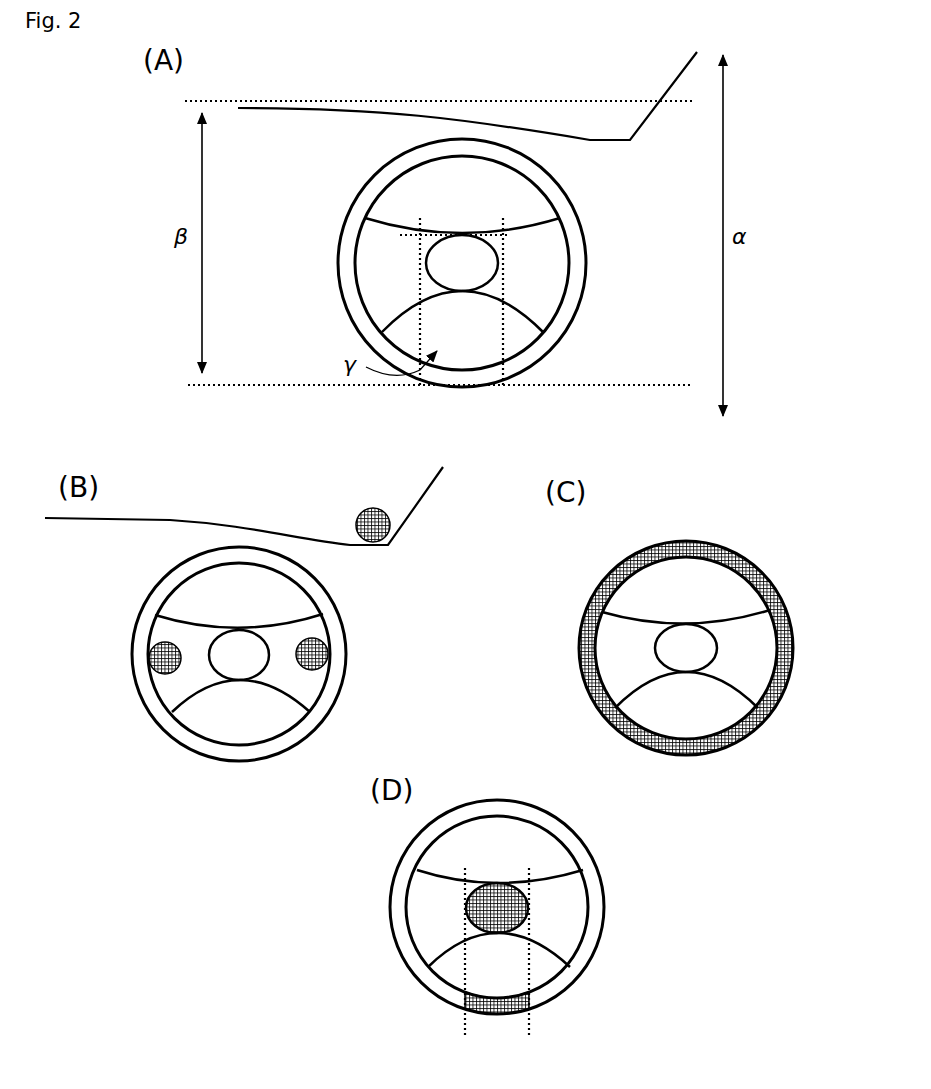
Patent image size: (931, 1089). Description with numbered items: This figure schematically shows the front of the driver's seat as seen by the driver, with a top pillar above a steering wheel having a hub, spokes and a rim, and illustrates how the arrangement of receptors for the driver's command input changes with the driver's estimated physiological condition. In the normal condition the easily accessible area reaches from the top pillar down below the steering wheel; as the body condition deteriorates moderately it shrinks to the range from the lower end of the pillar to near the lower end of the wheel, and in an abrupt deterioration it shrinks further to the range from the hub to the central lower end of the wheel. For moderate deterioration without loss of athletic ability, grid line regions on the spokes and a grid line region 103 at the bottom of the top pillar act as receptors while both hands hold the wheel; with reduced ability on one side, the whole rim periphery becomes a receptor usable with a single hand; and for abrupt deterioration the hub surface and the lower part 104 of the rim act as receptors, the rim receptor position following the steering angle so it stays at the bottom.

The grid line region 103 is at (376, 543).
The lower part of the rim 104 is at (498, 1013).